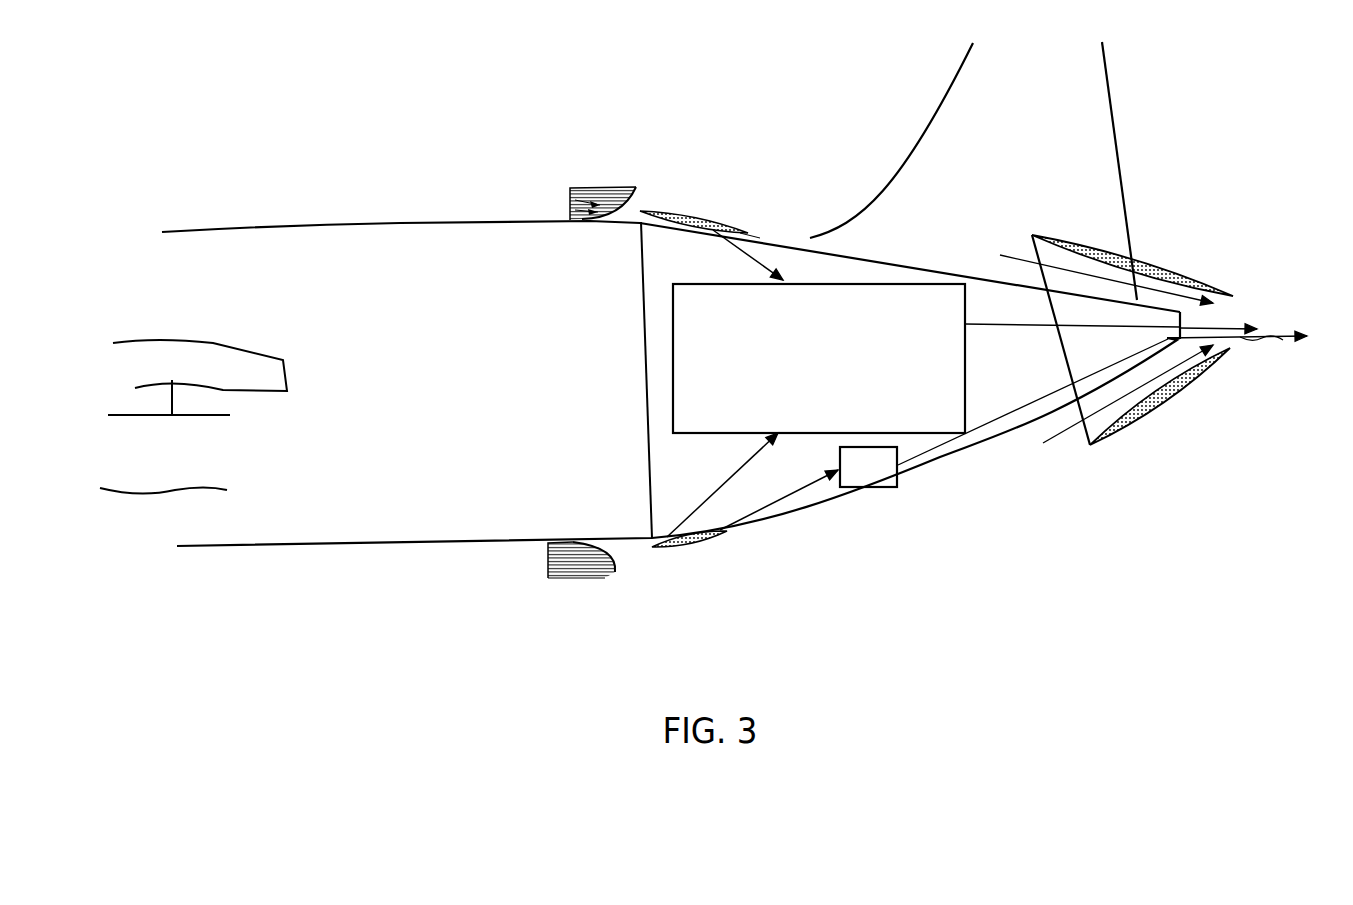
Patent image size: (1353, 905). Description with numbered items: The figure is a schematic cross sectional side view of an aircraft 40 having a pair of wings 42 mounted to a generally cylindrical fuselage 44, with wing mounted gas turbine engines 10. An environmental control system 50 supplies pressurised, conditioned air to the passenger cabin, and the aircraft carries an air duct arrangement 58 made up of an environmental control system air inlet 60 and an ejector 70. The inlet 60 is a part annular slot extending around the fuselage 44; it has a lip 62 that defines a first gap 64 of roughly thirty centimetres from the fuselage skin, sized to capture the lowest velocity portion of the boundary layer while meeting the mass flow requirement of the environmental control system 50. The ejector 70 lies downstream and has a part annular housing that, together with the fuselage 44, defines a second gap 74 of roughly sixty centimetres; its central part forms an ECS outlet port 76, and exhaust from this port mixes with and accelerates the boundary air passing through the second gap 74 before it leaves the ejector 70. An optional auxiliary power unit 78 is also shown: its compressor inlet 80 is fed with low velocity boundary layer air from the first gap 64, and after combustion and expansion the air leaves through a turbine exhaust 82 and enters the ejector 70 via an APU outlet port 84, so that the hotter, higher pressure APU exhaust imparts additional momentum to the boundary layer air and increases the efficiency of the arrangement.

The gas turbine engine 10 is at (220, 490).
The aircraft 40 is at (585, 615).
The wing 42 is at (168, 337).
The fuselage 44 is at (397, 222).
The environmental control system 50 is at (805, 272).
The air duct arrangement 58 is at (772, 68).
The environmental control system air inlet 60 is at (668, 212).
The lip 62 is at (632, 187).
The first gap 64 is at (708, 217).
The ejector 70 is at (1218, 247).
The second gap 74 is at (1053, 265).
The ECS outlet port 76 is at (1182, 325).
The auxiliary power unit 78 is at (898, 480).
The compressor inlet 80 is at (833, 470).
The turbine exhaust 82 is at (913, 470).
The APU outlet port 84 is at (1273, 345).